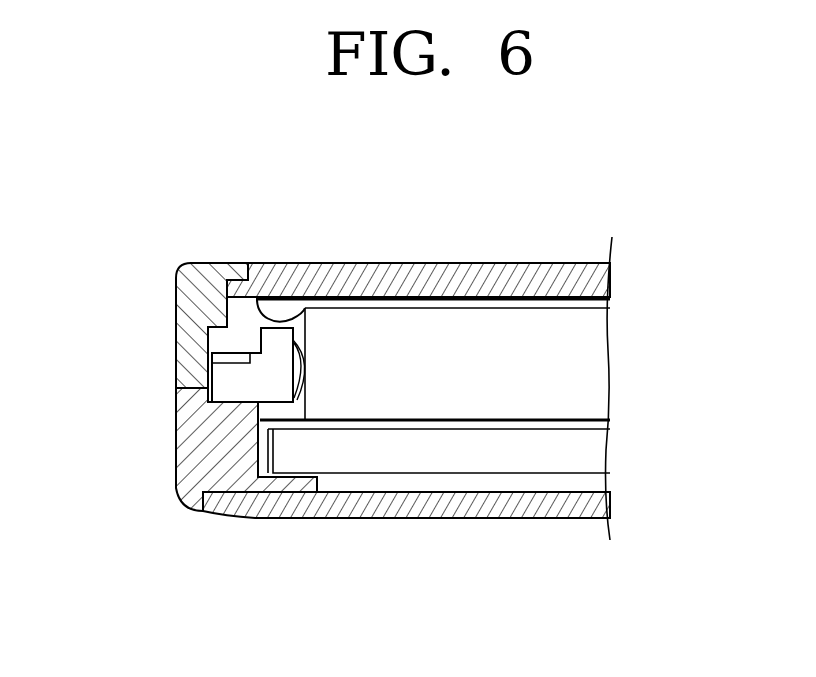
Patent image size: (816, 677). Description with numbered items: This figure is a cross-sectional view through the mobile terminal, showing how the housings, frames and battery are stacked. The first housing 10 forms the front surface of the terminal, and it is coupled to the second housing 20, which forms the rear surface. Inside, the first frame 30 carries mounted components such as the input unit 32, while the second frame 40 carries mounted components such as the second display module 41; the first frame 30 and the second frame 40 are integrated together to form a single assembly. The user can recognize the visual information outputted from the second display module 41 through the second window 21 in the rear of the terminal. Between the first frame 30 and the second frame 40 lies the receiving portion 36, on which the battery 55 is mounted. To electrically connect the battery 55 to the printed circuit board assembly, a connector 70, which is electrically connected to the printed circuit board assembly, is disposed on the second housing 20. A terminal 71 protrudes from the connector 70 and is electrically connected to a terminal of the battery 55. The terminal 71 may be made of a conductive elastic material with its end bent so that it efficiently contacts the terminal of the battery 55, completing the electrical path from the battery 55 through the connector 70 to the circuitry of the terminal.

The first housing 10 is at (177, 326).
The second housing 20 is at (187, 453).
The second window 21 is at (500, 520).
The first frame 30 is at (607, 302).
The input unit 32 is at (392, 264).
The receiving portion 36 is at (256, 298).
The second frame 40 is at (592, 423).
The second display module 41 is at (592, 459).
The battery 55 is at (592, 362).
The connector 70 is at (272, 382).
The terminal 71 is at (307, 368).